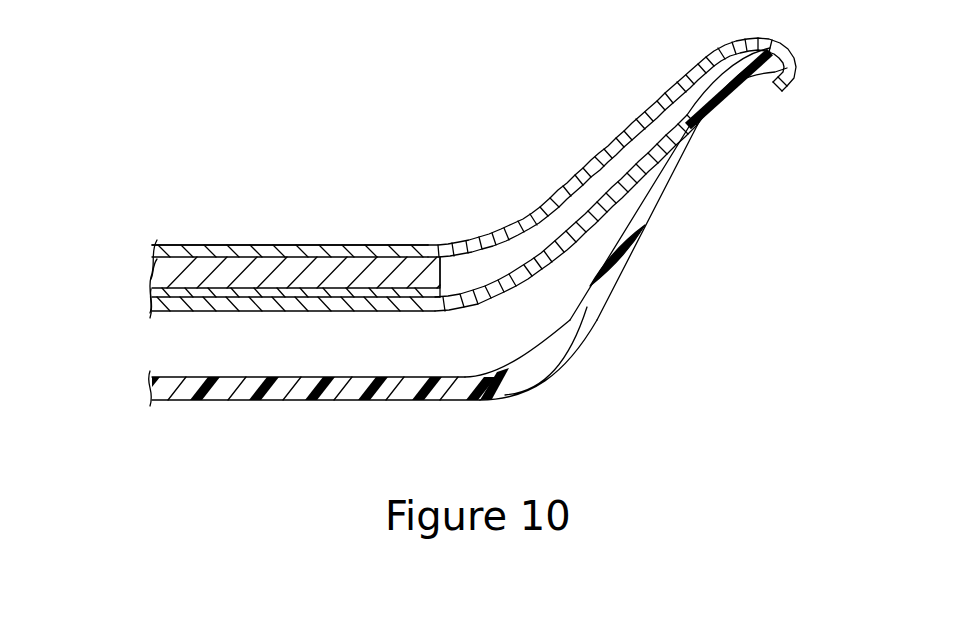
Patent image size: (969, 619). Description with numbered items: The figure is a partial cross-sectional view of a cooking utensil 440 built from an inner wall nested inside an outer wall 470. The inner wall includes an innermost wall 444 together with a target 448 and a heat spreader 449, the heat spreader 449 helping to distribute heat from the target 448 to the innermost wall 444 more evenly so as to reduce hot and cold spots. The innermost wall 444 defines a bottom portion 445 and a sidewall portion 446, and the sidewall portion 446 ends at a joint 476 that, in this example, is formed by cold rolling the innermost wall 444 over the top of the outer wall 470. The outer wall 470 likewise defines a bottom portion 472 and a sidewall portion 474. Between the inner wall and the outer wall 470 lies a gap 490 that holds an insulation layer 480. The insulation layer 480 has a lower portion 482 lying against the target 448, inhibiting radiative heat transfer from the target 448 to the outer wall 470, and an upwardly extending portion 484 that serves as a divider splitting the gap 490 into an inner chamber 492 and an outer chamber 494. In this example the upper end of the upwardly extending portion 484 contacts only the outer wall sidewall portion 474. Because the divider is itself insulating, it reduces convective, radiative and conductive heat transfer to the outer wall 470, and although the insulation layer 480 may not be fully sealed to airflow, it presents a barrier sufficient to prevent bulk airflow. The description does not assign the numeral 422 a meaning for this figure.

The cooking utensil 440 is at (197, 195).
The core layer 422 is at (277, 216).
The innermost wall 444 is at (426, 218).
The bottom portion 445 is at (313, 246).
The sidewall portion 446 is at (680, 72).
The target 448 is at (160, 295).
The heat spreader 449 is at (167, 270).
The outer wall 470 is at (656, 276).
The bottom portion 472 is at (440, 400).
The sidewall portion 474 is at (680, 146).
The joint 476 is at (789, 87).
The insulation layer 480 is at (425, 311).
The lower portion 482 is at (290, 300).
The upwardly extending portion 484 is at (620, 187).
The gap 490 is at (621, 330).
The inner chamber 492 is at (448, 275).
The outer chamber 494 is at (540, 327).